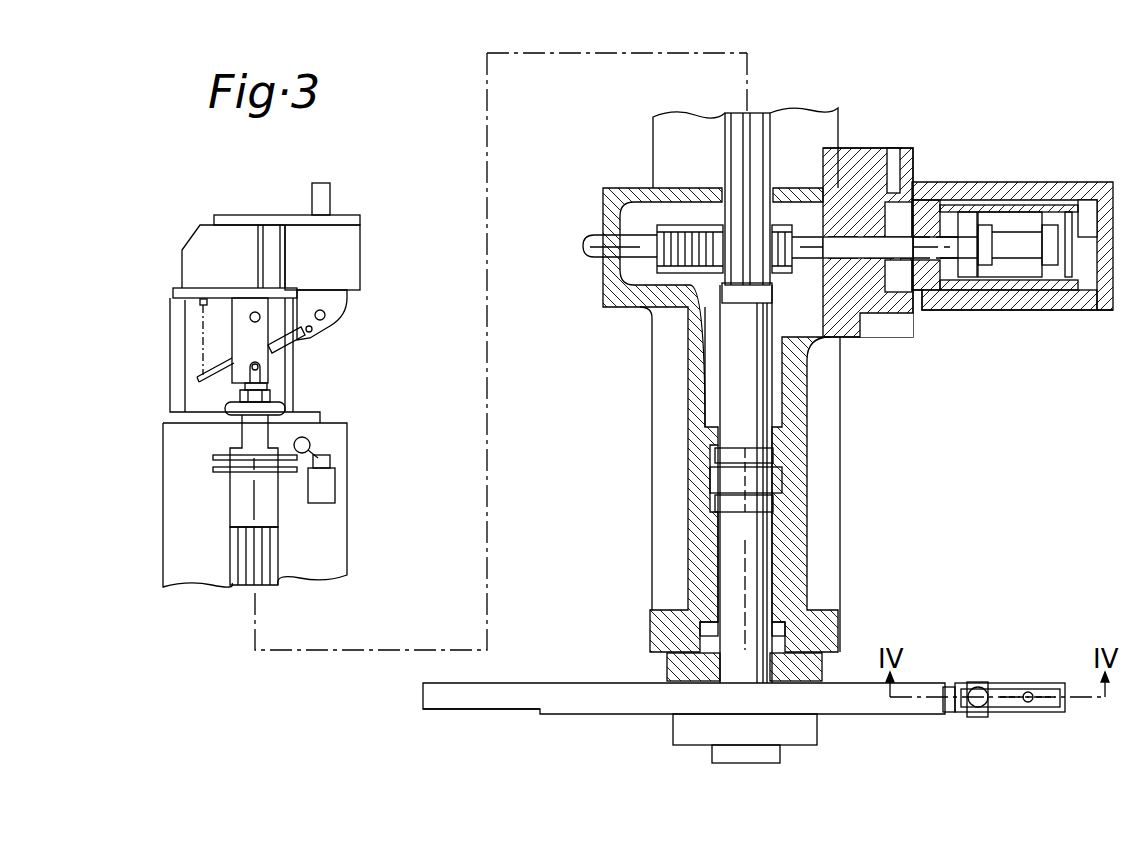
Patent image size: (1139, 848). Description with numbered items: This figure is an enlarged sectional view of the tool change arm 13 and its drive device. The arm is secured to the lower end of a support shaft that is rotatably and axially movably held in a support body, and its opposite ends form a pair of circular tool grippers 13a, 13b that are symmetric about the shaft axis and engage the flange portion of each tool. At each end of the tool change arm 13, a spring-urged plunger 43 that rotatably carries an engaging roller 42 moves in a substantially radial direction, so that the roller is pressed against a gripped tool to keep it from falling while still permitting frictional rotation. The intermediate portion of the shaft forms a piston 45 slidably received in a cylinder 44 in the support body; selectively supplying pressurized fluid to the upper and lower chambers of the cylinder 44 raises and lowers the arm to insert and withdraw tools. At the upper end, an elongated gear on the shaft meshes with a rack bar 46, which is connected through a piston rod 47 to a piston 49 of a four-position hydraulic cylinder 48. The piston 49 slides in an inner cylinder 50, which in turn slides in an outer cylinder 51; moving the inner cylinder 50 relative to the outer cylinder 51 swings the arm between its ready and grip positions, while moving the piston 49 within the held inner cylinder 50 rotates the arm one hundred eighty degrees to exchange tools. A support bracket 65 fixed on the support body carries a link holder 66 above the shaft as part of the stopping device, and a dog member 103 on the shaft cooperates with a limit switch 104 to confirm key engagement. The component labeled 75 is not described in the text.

The tool change arm 13 is at (628, 710).
The tool gripper 13a is at (1040, 700).
The tool gripper 13b is at (480, 712).
The engaging roller 42 is at (978, 704).
The plunger 43 is at (945, 690).
The cylinder 44 is at (715, 550).
The piston 45 is at (775, 487).
The rack bar 46 is at (690, 240).
The piston rod 47 is at (893, 250).
The hydraulic cylinder 48 is at (1063, 182).
The piston 49 is at (968, 225).
The inner cylinder 50 is at (1003, 230).
The outer cylinder 51 is at (1003, 300).
The support bracket 65 is at (162, 304).
The link holder 66 is at (253, 305).
The actuator 75 is at (340, 257).
The dog member 103 is at (220, 452).
The limit switch 104 is at (332, 477).